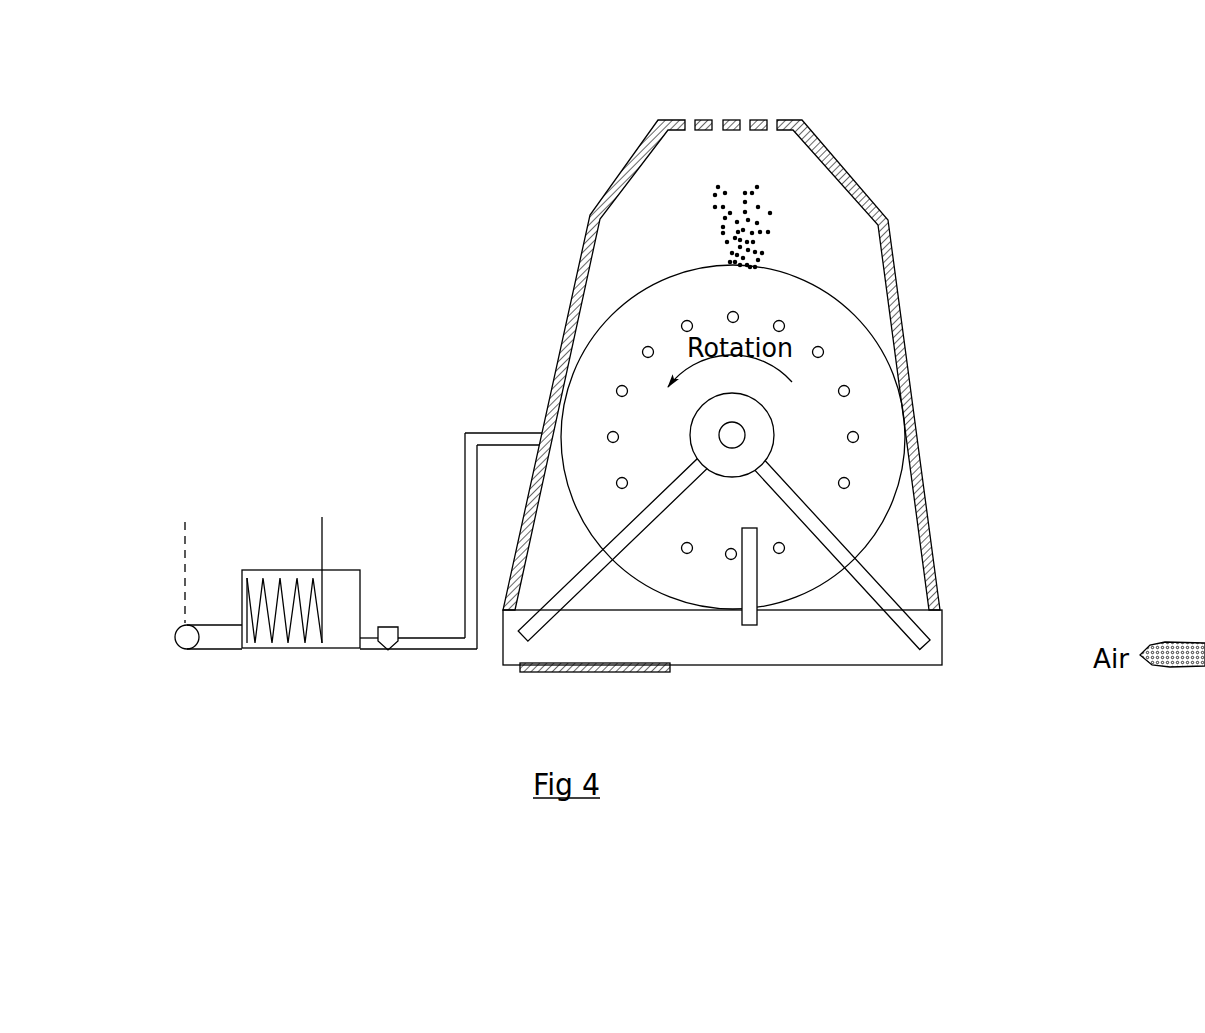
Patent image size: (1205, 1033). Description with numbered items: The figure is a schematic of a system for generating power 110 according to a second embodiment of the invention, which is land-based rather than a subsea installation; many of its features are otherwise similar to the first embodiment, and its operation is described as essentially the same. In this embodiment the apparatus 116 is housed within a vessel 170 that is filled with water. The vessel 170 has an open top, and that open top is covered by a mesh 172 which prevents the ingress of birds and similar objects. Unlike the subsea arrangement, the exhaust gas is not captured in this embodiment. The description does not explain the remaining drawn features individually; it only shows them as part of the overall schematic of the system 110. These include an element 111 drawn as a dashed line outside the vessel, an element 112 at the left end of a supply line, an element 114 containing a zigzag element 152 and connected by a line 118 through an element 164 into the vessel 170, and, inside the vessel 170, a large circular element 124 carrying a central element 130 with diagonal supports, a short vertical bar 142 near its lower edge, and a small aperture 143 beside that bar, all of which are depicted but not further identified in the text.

The system for generating power 110 is at (385, 388).
The air supply line 111 is at (187, 537).
The blower 112 is at (175, 637).
The heater 114 is at (232, 536).
The apparatus 116 is at (802, 354).
The conduit 118 is at (451, 582).
The rotating drum 124 is at (834, 488).
The hub 130 is at (779, 440).
The blade 142 is at (755, 548).
The aperture 143 is at (735, 560).
The heating element 152 is at (242, 600).
The valve 164 is at (390, 627).
The vessel 170 is at (925, 382).
The mesh 172 is at (700, 135).